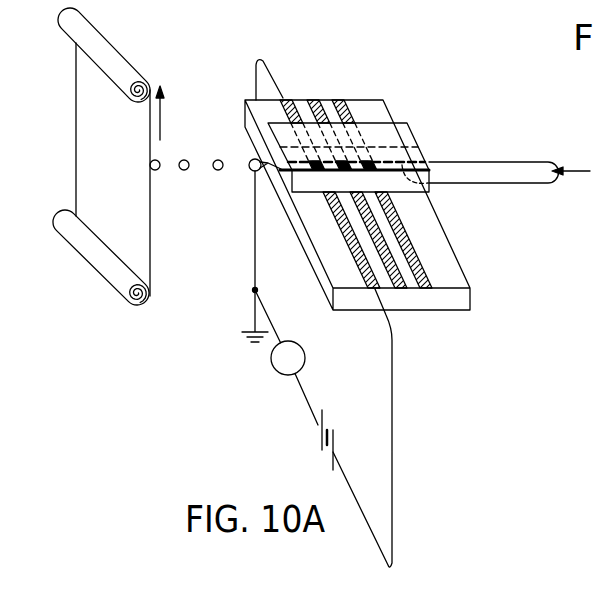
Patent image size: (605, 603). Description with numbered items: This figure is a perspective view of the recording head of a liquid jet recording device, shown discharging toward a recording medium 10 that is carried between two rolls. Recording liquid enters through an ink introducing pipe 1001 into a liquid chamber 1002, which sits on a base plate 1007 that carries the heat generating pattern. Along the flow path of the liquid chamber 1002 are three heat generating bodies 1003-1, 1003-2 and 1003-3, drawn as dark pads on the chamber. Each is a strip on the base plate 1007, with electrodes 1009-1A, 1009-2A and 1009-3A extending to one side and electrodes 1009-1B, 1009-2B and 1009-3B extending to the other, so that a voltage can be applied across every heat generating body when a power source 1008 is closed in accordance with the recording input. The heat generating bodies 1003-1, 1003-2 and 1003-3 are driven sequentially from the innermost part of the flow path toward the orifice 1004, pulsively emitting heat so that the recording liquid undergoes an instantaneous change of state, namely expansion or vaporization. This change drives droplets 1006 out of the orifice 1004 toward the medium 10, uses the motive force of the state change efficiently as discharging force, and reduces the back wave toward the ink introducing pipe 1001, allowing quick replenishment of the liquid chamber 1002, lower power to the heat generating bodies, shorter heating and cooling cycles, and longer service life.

The film 10 is at (151, 262).
The ink introducing pipe 1001 is at (527, 161).
The liquid chamber 1002 is at (430, 186).
The heat generating body 1003-1 is at (370, 164).
The heat generating body 1003-2 is at (340, 164).
The heat generating body 1003-3 is at (311, 167).
The orifice 1004 is at (257, 158).
The droplets 1006 is at (186, 113).
The base plate 1007 is at (470, 298).
The power source 1008 is at (318, 446).
The electrode 1009-1A is at (424, 274).
The electrode 1009-2A is at (398, 290).
The electrode 1009-3A is at (366, 284).
The electrode 1009-1B is at (341, 99).
The electrode 1009-2B is at (311, 98).
The electrode 1009-3B is at (280, 83).